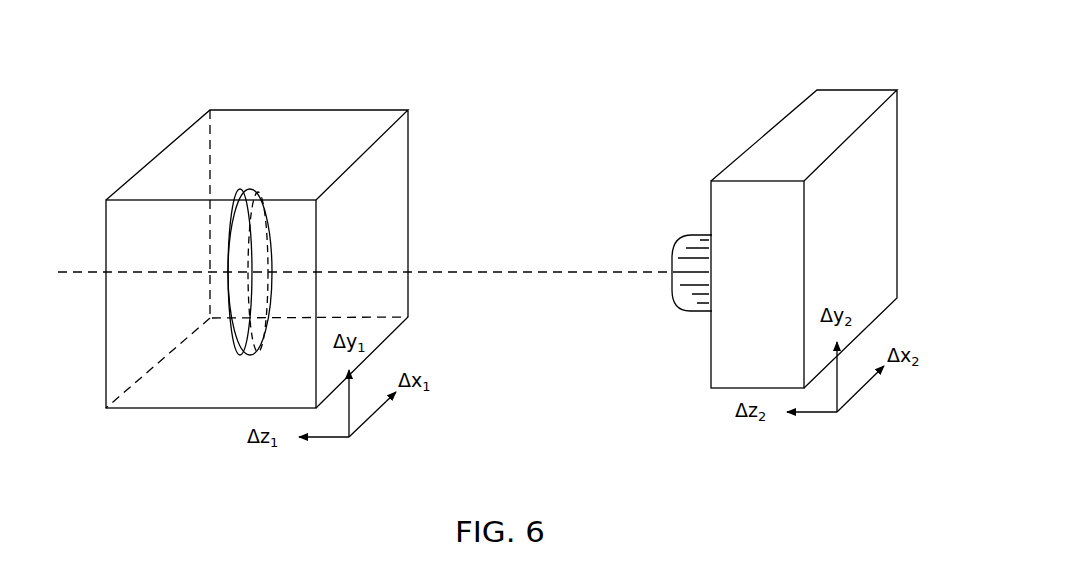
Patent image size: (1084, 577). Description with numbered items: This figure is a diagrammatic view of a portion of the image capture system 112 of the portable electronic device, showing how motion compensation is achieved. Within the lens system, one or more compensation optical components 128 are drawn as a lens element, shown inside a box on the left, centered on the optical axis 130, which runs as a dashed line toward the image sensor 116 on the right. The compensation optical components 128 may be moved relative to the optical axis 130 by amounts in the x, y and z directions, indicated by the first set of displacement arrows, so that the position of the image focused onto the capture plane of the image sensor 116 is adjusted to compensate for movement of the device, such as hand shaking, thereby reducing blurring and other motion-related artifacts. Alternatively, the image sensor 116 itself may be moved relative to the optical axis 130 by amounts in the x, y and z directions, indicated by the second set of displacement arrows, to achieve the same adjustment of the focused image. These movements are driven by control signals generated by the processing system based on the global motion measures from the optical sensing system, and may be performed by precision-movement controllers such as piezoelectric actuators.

The image capture system 112 is at (288, 110).
The compensation optical components 128 is at (243, 355).
The optical axis 130 is at (520, 272).
The image sensor 116 is at (855, 90).